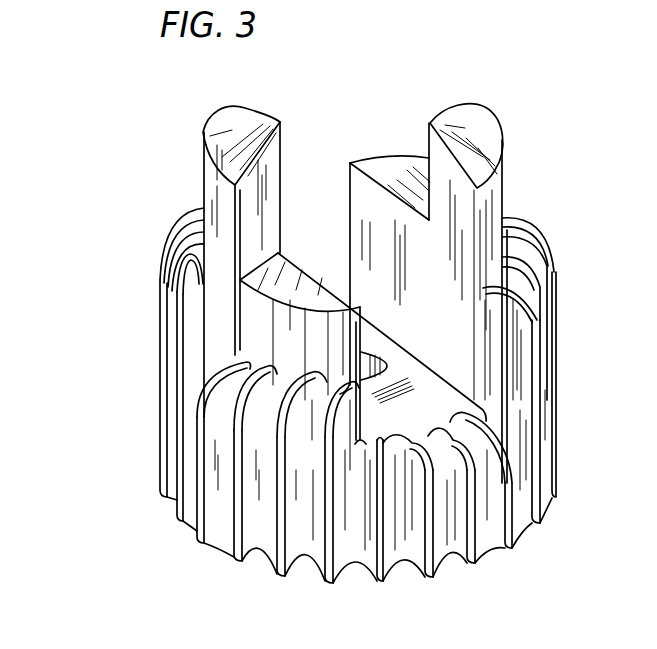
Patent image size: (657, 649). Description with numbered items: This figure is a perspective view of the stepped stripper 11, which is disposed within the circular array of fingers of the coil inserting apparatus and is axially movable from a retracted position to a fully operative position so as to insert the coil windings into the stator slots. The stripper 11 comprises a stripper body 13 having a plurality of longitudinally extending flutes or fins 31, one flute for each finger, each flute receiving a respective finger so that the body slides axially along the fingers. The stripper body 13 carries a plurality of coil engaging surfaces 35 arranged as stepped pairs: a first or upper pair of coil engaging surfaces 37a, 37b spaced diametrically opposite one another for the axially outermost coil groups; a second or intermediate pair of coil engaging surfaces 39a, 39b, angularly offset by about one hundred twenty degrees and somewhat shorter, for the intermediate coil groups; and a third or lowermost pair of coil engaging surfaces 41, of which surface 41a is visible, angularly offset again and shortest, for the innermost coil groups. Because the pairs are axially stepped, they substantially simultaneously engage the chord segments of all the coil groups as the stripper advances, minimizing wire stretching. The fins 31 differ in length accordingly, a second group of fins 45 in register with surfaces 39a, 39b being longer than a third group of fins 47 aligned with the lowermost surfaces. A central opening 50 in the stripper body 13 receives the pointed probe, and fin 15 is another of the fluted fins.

The stepped stripper 11 is at (140, 481).
The stripper body 13 is at (240, 333).
The fin 15 is at (415, 558).
The flutes 31 is at (308, 572).
The coil engaging surfaces 35 is at (226, 112).
The first coil engaging surface 37a is at (221, 144).
The first coil engaging surface 37b is at (486, 128).
The second coil engaging surface 39a is at (285, 258).
The second coil engaging surface 39b is at (390, 172).
The third pair of coil engaging surfaces 41 is at (160, 418).
The third coil engaging surface 41a is at (433, 437).
The second group of fins 45 is at (200, 532).
The third group of fins 47 is at (476, 550).
The central opening 50 is at (385, 368).